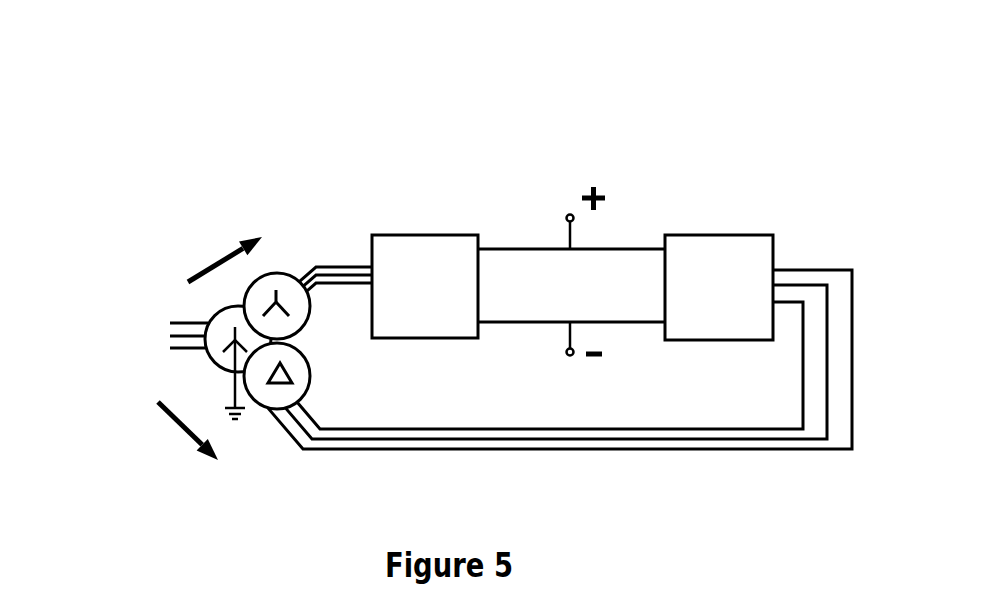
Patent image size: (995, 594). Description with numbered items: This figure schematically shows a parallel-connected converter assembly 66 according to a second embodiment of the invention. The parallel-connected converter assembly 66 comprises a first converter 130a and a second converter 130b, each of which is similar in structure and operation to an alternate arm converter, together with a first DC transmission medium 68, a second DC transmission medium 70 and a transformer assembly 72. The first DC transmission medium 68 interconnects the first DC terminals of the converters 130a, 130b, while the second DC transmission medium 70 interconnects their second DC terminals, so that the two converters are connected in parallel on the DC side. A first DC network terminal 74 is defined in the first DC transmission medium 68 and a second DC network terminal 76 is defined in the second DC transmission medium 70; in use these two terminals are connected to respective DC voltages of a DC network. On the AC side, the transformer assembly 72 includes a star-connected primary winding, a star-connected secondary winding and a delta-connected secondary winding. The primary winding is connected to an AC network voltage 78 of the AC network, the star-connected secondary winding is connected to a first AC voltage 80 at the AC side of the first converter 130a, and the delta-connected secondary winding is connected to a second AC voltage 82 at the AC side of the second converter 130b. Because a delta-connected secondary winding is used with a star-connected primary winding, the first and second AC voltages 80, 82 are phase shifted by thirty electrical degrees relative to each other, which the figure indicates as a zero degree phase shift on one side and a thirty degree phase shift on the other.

The parallel-connected converter assembly 66 is at (305, 127).
The first DC transmission medium 68 is at (516, 243).
The second DC transmission medium 70 is at (524, 334).
The transformer assembly 72 is at (305, 348).
The first DC network terminal 74 is at (572, 205).
The second DC network terminal 76 is at (569, 368).
The AC network voltage 78 is at (160, 338).
The first AC voltage 80 is at (366, 256).
The second AC voltage 82 is at (781, 261).
The first converter 130a is at (462, 299).
The second converter 130b is at (757, 299).